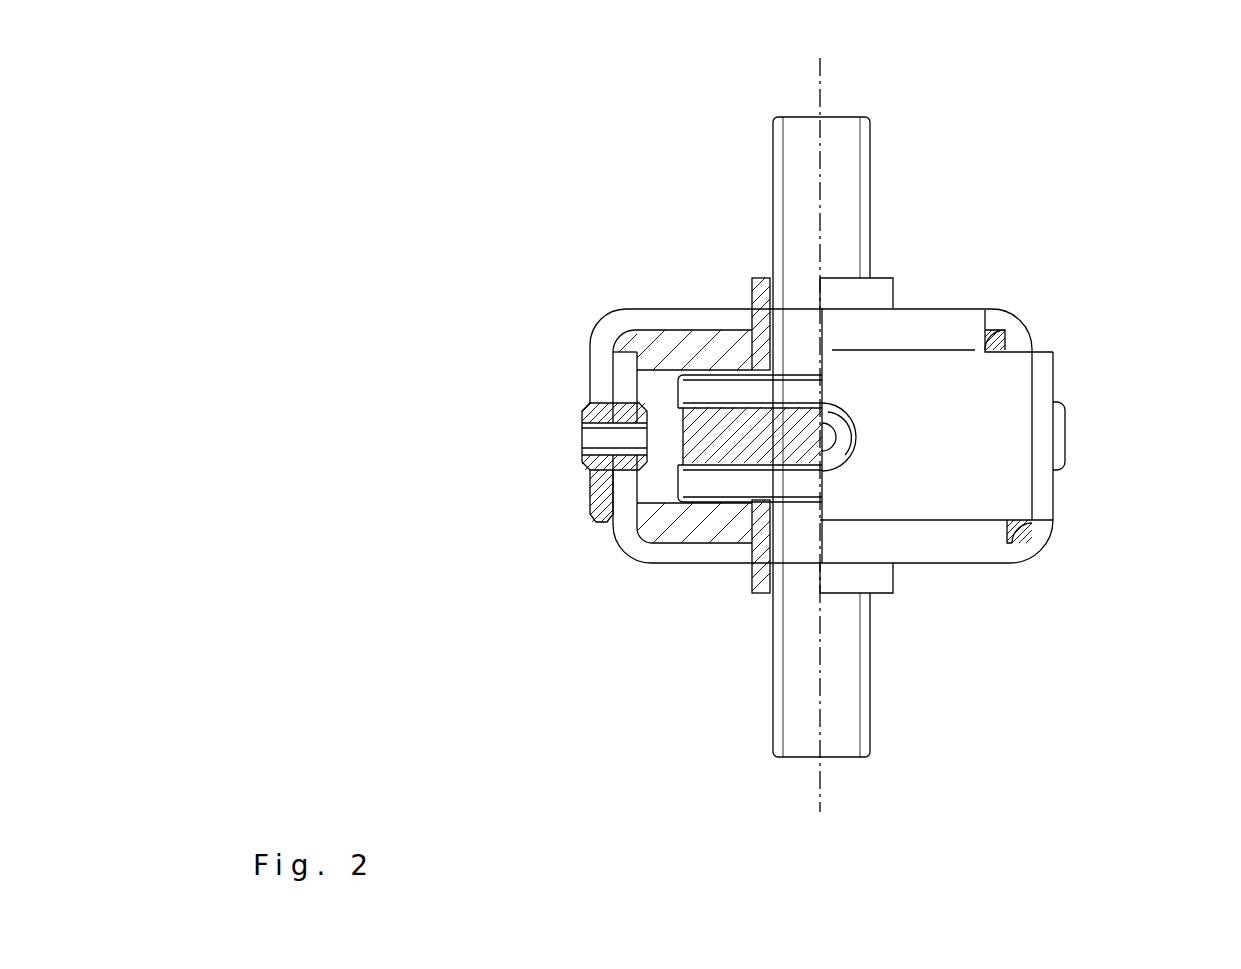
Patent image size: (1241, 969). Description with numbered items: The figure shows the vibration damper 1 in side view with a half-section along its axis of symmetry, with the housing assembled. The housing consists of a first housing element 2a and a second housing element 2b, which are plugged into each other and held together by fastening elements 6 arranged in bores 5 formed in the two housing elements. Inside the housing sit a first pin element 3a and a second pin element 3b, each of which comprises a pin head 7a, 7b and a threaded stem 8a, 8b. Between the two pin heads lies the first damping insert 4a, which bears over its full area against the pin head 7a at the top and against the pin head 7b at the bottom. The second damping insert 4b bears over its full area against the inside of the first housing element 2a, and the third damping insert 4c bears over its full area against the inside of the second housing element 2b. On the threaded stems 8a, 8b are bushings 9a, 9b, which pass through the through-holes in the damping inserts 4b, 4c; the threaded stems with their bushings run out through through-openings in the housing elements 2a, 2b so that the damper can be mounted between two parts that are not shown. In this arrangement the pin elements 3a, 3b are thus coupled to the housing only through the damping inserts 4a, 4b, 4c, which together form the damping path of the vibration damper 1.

The vibration damper 1 is at (1029, 126).
The first housing element 2a is at (623, 315).
The second housing element 2b is at (653, 557).
The first pin element 3a is at (840, 197).
The second pin element 3b is at (845, 703).
The first damping insert 4a is at (838, 412).
The second damping insert 4b is at (697, 345).
The third damping insert 4c is at (695, 520).
The bores 5 is at (585, 455).
The fastening elements 6 is at (1067, 428).
The pin head 7a is at (688, 390).
The pin head 7b is at (688, 483).
The threaded stem 8a is at (866, 123).
The threaded stem 8b is at (863, 642).
The bushing 9a is at (761, 290).
The bushing 9b is at (760, 580).